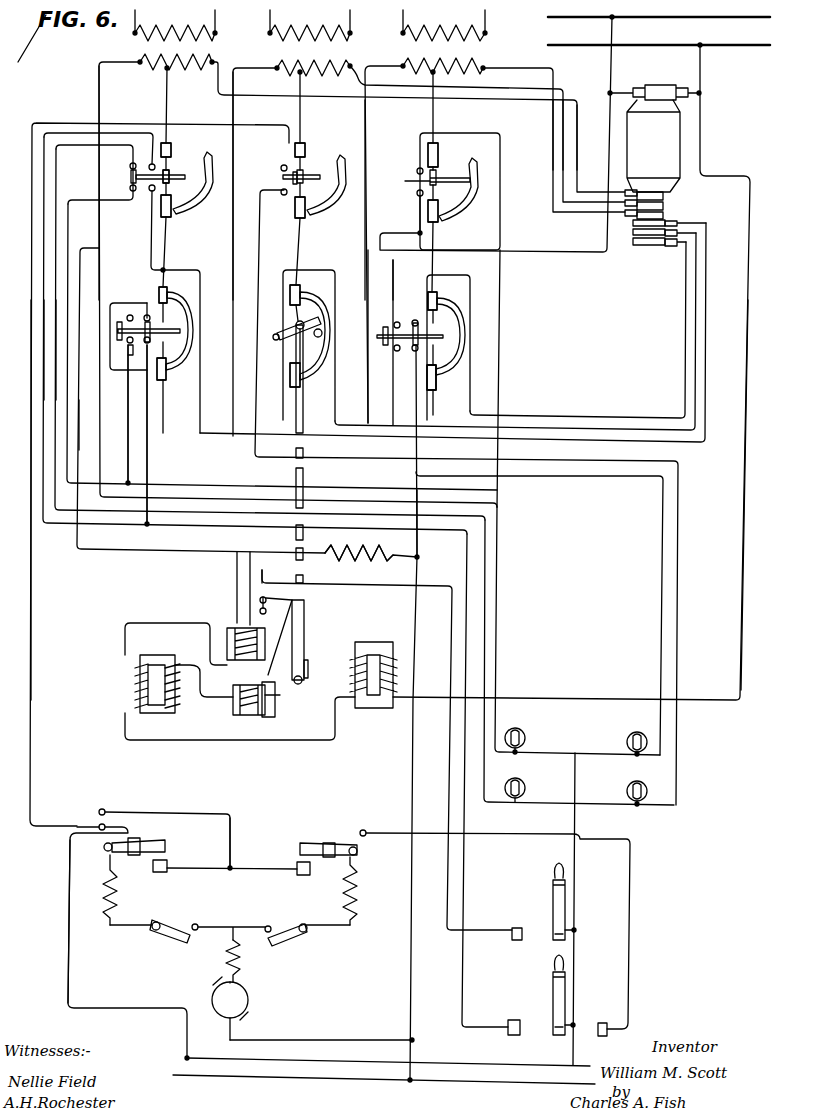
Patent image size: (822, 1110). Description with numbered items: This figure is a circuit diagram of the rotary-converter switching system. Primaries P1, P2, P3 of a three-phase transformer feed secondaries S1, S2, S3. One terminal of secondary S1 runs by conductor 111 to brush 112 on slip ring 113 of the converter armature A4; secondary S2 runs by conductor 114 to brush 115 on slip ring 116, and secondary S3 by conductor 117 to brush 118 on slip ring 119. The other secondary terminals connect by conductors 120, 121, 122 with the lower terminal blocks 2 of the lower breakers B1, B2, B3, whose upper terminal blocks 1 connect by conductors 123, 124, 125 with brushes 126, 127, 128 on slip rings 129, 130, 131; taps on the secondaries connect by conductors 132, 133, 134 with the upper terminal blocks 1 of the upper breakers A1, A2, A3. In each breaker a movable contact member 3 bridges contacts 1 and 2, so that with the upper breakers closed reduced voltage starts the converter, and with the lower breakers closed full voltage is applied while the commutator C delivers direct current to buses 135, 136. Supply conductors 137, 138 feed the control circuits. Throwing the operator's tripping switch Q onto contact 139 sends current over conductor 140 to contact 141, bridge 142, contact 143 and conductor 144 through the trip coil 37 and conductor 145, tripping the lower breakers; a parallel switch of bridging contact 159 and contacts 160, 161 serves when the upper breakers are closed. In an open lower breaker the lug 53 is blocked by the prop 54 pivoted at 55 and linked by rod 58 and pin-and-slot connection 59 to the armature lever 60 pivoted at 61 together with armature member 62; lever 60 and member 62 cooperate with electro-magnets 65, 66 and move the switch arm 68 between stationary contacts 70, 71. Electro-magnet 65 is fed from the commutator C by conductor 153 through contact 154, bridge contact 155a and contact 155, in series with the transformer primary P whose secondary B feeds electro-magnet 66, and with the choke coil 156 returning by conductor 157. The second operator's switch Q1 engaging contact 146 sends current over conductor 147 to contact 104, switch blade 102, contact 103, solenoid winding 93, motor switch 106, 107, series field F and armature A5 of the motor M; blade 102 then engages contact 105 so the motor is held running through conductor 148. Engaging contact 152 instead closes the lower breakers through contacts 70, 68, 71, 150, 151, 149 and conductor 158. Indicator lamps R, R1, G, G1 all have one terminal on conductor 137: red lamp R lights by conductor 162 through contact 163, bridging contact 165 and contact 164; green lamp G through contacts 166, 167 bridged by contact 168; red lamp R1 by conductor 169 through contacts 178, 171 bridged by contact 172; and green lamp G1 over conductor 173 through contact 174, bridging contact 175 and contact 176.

The upper terminal block 1 is at (173, 152).
The lower terminal block 2 is at (172, 215).
The movable contact member 3 is at (200, 194).
The trip coil 37 is at (378, 560).
The lug 53 is at (322, 334).
The block 54 is at (293, 325).
The pivot 55 is at (275, 340).
The rod 58 is at (304, 420).
The pin and slot connection 59 is at (309, 662).
The armature lever 60 is at (305, 630).
The pivot 61 is at (298, 684).
The armature member 62 is at (276, 708).
The electro-magnet 65 is at (228, 632).
The electro-magnet 66 is at (252, 715).
The movable switch arm 68 is at (290, 605).
The stationary contact 70 is at (274, 581).
The second stationary contact 71 is at (260, 612).
The solenoid winding 93 is at (103, 897).
The switch blade 102 is at (162, 845).
The contact 103 is at (104, 849).
The contact 104 is at (135, 840).
The contact 105 is at (163, 872).
The motor switch 106 is at (170, 940).
The motor switch contact 107 is at (197, 924).
The conductor 111 is at (578, 145).
The brush 112 is at (627, 192).
The slip ring 113 is at (665, 193).
The conductor 114 is at (563, 145).
The brush 115 is at (627, 204).
The slip ring 116 is at (665, 204).
The conductor 117 is at (553, 131).
The brush 118 is at (627, 214).
The slip ring 119 is at (665, 214).
The conductor 120 is at (20, 338).
The conductor 121 is at (233, 147).
The conductor 122 is at (365, 140).
The conductor 123 is at (706, 272).
The conductor 124 is at (696, 310).
The conductor 125 is at (686, 305).
The brush 126 is at (708, 223).
The brush 127 is at (698, 236).
The brush 128 is at (672, 246).
The slip ring 129 is at (633, 223).
The slip ring 130 is at (643, 233).
The slip ring 131 is at (648, 245).
The conductor 132 is at (167, 104).
The conductor 133 is at (300, 108).
The conductor 134 is at (436, 108).
The direct current bus 135 is at (575, 17).
The direct current bus 136 is at (560, 45).
The supply conductor 137 is at (470, 1063).
The supply conductor 138 is at (450, 1081).
The contact 139 is at (512, 938).
The conductor 140 is at (150, 445).
The contact 141 is at (150, 341).
The connecting bridge 142 is at (150, 318).
The contact 143 is at (147, 305).
The conductor 144 is at (120, 250).
The conductor 145 is at (65, 375).
The contact 146 is at (602, 1022).
The conductor 147 is at (350, 830).
The conductor 148 is at (235, 830).
The contact 149 is at (282, 166).
The contact 150 is at (283, 195).
The contact 151 is at (292, 177).
The contact 152 is at (513, 1036).
The conductor 153 is at (562, 252).
The contact 154 is at (395, 322).
The contact 155 is at (395, 349).
The bridge contact 155a is at (383, 330).
The choke coil 156 is at (372, 700).
The conductor 157 is at (712, 130).
The conductor 158 is at (33, 572).
The bridging contact 159 is at (167, 183).
The contact 160 is at (150, 191).
The contact 161 is at (150, 164).
The conductor 162 is at (105, 415).
The contact 163 is at (130, 315).
The contact 164 is at (130, 357).
The bridging contact 165 is at (130, 343).
The contact 166 is at (436, 385).
The contact 167 is at (415, 320).
The bridging contact 168 is at (418, 348).
The conductor 169 is at (56, 445).
The contact 171 is at (130, 165).
The bridging contact 172 is at (131, 176).
The conductor 173 is at (503, 310).
The contact 174 is at (418, 170).
The bridging contact 175 is at (405, 181).
The contact 176 is at (418, 194).
The contact 178 is at (130, 188).
The upper breaker A1 is at (172, 175).
The upper breaker A2 is at (312, 175).
The upper breaker A3 is at (460, 191).
The armature A4 is at (653, 146).
The armature A5 is at (248, 1000).
The secondary B is at (180, 686).
The lower breaker B1 is at (151, 325).
The lower breaker B2 is at (309, 345).
The lower breaker B3 is at (423, 347).
The direct current commutator C is at (655, 85).
The series field F is at (243, 968).
The green lamp G is at (627, 740).
The green lamp G1 is at (627, 791).
The motor M is at (210, 995).
The primary P is at (135, 682).
The primary P1 is at (175, 24).
The primary P2 is at (310, 24).
The primary P3 is at (444, 24).
The operator's tripping switch Q is at (553, 900).
The operator's switch Q1 is at (553, 995).
The red lamp R is at (526, 738).
The red lamp R1 is at (526, 788).
The secondary S1 is at (186, 66).
The secondary S2 is at (278, 69).
The secondary S3 is at (470, 62).